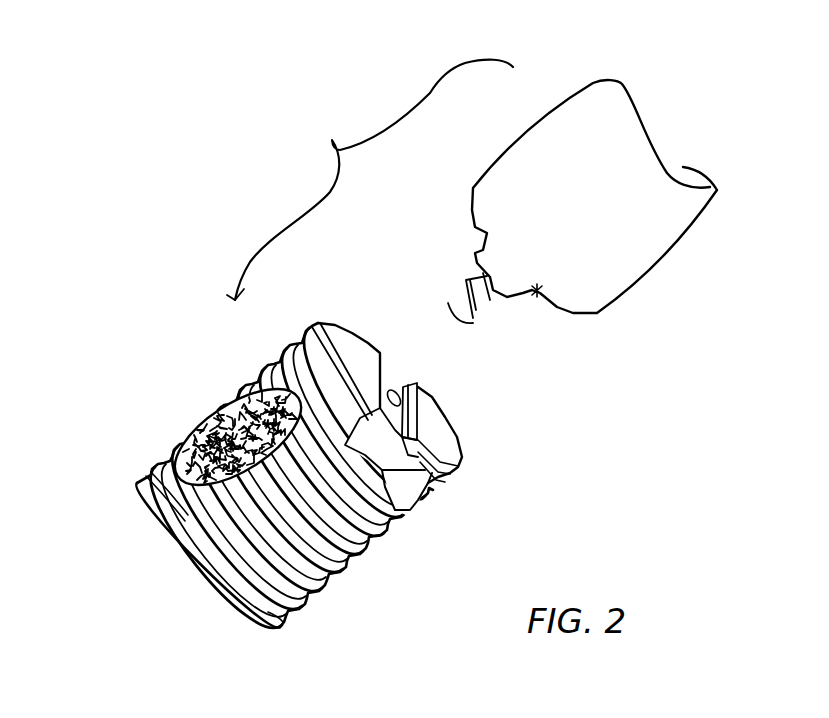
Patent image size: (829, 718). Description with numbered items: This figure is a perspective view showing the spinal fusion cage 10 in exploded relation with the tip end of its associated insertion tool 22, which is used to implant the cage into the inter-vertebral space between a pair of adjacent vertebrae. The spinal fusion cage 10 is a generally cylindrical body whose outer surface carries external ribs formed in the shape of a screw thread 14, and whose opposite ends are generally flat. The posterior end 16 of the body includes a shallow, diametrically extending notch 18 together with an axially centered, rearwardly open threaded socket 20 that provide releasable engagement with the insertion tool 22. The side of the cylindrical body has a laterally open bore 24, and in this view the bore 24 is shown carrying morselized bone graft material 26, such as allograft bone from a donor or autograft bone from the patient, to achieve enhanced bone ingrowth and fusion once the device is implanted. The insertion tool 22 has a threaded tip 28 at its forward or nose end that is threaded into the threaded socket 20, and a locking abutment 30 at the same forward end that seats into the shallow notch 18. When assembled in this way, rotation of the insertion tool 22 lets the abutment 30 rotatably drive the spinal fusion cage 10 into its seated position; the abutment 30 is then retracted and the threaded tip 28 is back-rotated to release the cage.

The spinal fusion cage 10 is at (143, 365).
The screw thread 14 is at (307, 592).
The posterior end 16 is at (458, 437).
The notch 18 is at (425, 487).
The threaded socket 20 is at (407, 383).
The insertion tool 22 is at (593, 107).
The laterally open bore 24 is at (162, 520).
The bone graft material 26 is at (243, 398).
The threaded tip 28 is at (466, 310).
The locking abutment 30 is at (537, 291).